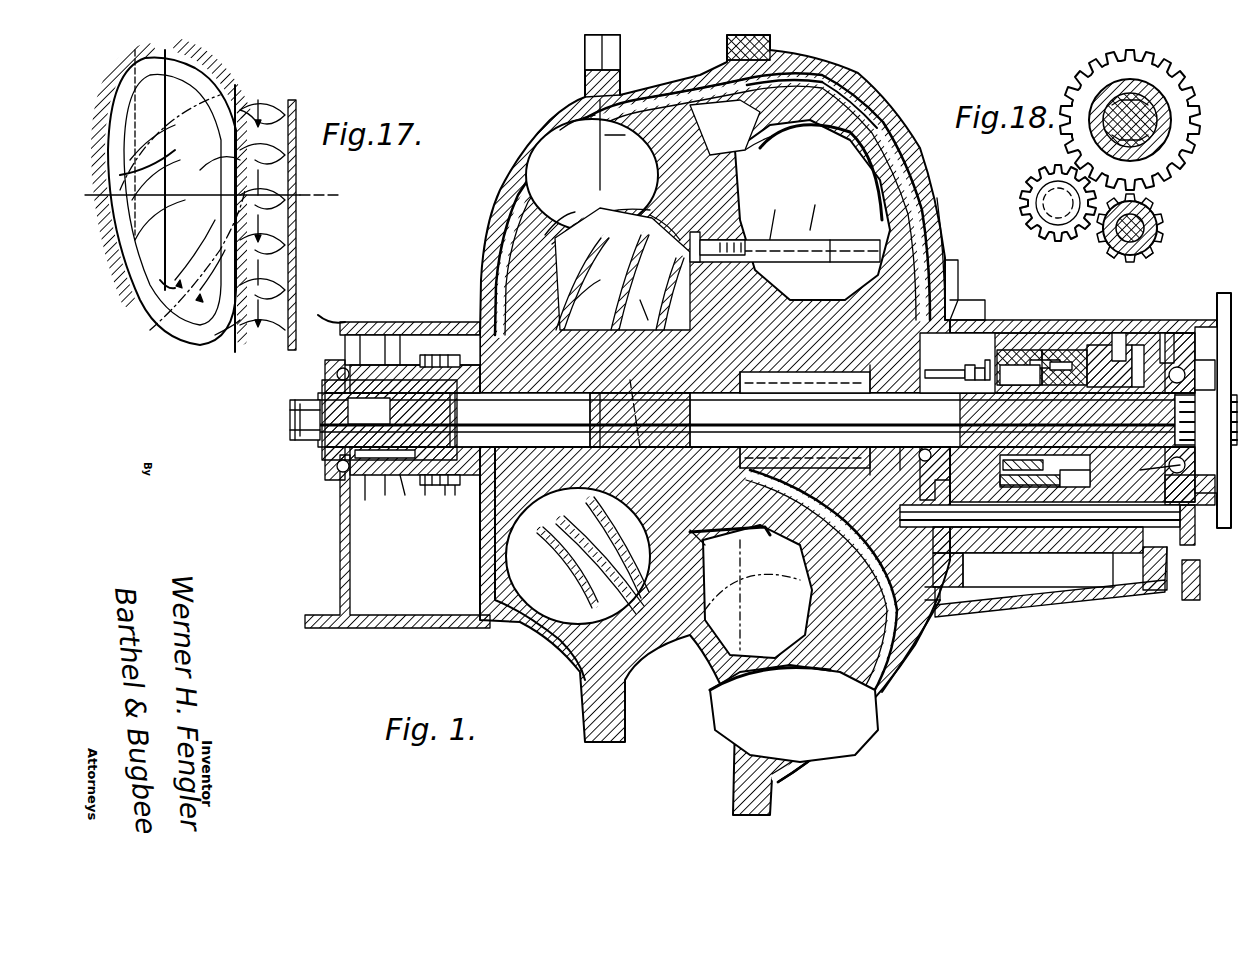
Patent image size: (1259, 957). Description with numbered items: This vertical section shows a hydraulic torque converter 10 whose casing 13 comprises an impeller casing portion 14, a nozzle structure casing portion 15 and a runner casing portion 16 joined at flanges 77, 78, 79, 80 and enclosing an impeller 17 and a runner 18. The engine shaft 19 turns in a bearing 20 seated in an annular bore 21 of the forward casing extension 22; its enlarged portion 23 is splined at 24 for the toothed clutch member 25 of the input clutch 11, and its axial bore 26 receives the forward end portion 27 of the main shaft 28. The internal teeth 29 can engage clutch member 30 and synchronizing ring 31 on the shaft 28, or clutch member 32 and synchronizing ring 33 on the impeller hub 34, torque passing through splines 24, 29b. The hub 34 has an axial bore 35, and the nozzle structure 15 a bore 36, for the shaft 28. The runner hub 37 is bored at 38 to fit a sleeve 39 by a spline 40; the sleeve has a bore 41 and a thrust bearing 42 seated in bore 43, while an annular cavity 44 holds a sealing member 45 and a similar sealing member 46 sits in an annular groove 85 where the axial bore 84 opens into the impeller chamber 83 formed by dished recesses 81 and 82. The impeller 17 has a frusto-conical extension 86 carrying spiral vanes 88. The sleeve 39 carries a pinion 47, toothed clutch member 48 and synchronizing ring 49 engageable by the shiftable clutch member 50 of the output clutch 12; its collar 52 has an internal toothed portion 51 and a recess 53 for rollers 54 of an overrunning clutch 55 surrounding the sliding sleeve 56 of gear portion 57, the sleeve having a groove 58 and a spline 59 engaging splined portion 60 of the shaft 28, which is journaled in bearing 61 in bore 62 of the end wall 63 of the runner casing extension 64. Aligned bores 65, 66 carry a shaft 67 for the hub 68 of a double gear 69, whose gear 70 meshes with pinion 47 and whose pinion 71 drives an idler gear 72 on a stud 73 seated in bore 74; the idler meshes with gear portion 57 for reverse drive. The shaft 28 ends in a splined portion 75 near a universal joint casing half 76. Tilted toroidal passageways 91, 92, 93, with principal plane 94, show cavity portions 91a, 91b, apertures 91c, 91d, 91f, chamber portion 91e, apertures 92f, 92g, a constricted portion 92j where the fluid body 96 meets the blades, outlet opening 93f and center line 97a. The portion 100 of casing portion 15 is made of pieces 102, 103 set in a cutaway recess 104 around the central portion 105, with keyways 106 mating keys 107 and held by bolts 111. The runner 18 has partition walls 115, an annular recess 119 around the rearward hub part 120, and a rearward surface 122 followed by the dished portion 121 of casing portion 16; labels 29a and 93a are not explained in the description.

In FIG. 1, the hydraulic torque converter 10 is at (480, 290).
In FIG. 1, the input clutch 11 is at (400, 322).
In FIG. 1, the output clutch 12 is at (1028, 320).
In FIG. 1, the casing 13 is at (555, 105).
In FIG. 1, the impeller casing portion 14 is at (498, 190).
In FIG. 17, the impeller casing portion 14 is at (125, 228).
In FIG. 1, the nozzle structure casing portion 15 is at (668, 86).
In FIG. 17, the nozzle structure casing portion 15 is at (206, 100).
In FIG. 1, the runner casing portion 16 is at (848, 82).
In FIG. 1, the impeller 17 is at (478, 583).
In FIG. 17, the impeller 17 is at (135, 70).
In FIG. 1, the runner 18 is at (870, 115).
In FIG. 17, the runner 18 is at (298, 218).
In FIG. 1, the engine shaft 19 is at (290, 414).
In FIG. 1, the anti-friction bearing 20 is at (333, 370).
In FIG. 1, the annular bore 21 is at (348, 322).
In FIG. 1, the forward casing extension 22 is at (340, 535).
In FIG. 1, the enlarged portion 23 is at (367, 340).
In FIG. 1, the spline 24 is at (372, 475).
In FIG. 1, the toothed annular clutch member 25 is at (380, 475).
In FIG. 1, the axial bore 26 is at (362, 478).
In FIG. 1, the reduced diameter forward end portion 27 is at (389, 420).
In FIG. 1, the main shaft 28 is at (768, 420).
In FIG. 17, the main shaft 28 is at (333, 182).
In FIG. 1, the internal teeth 29 is at (440, 356).
In FIG. 1, the lower spring 29a is at (442, 486).
In FIG. 1, the spline 29b is at (400, 340).
In FIG. 1, the toothed clutch member 30 is at (400, 478).
In FIG. 1, the toothed synchronizing ring 31 is at (428, 478).
In FIG. 1, the toothed clutch member 32 is at (462, 478).
In FIG. 1, the toothed synchronizing ring 33 is at (470, 478).
In FIG. 1, the impeller hub 34 is at (470, 325).
In FIG. 1, the axial bore 35 is at (470, 420).
In FIG. 1, the bore 36 is at (700, 405).
In FIG. 1, the runner hub 37 is at (755, 512).
In FIG. 1, the bore 38 is at (795, 440).
In FIG. 1, the sleeve 39 is at (855, 375).
In FIG. 1, the spline 40 is at (920, 408).
In FIG. 1, the bore 41 is at (820, 375).
In FIG. 1, the anti-friction thrust bearing 42 is at (940, 370).
In FIG. 1, the bore 43 is at (950, 305).
In FIG. 1, the annular cavity 44 is at (952, 278).
In FIG. 1, the spring-pressed annular sealing member 45 is at (962, 300).
In FIG. 1, the annular sealing member 46 is at (587, 294).
In FIG. 1, the pinion 47 is at (948, 365).
In FIG. 1, the toothed clutch member 48 is at (965, 368).
In FIG. 1, the toothed synchronizing ring 49 is at (985, 360).
In FIG. 1, the shiftable clutch member 50 is at (1035, 350).
In FIG. 1, the internal toothed portion 51 is at (1000, 350).
In FIG. 1, the rotatable collar 52 is at (1030, 480).
In FIG. 1, the internal recess 53 is at (1085, 345).
In FIG. 1, the rollers 54 is at (1060, 350).
In FIG. 1, the overrunning clutch 55 is at (1074, 479).
In FIG. 1, the sliding sleeve 56 is at (1020, 375).
In FIG. 18, the sliding sleeve 56 is at (1150, 95).
In FIG. 1, the external gear portion 57 is at (1118, 333).
In FIG. 18, the external gear portion 57 is at (1178, 170).
In FIG. 1, the annular groove 58 is at (1135, 333).
In FIG. 1, the spline 59 is at (1120, 378).
In FIG. 18, the spline 59 is at (1160, 107).
In FIG. 1, the splined portion 60 is at (1050, 466).
In FIG. 18, the splined portion 60 is at (1158, 128).
In FIG. 1, the anti-friction bearing 61 is at (1188, 378).
In FIG. 1, the bore 62 is at (1178, 333).
In FIG. 1, the end wall 63 is at (1166, 320).
In FIG. 1, the runner casing extension 64 is at (1045, 605).
In FIG. 1, the bore 65 is at (934, 473).
In FIG. 1, the bore 66 is at (1180, 520).
In FIG. 1, the shaft 67 is at (1040, 516).
In FIG. 18, the shaft 67 is at (1140, 232).
In FIG. 1, the hub 68 is at (1022, 553).
In FIG. 18, the hub 68 is at (1148, 256).
In FIG. 1, the double gear 69 is at (1005, 560).
In FIG. 18, the double gear 69 is at (1110, 256).
In FIG. 1, the gear 70 is at (955, 600).
In FIG. 1, the pinion 71 is at (1158, 588).
In FIG. 18, the pinion 71 is at (1160, 215).
In FIG. 1, the idler gear 72 is at (1195, 462).
In FIG. 18, the idler gear 72 is at (1020, 208).
In FIG. 18, the jack shaft 73 is at (1058, 203).
In FIG. 1, the bore 74 is at (1185, 476).
In FIG. 1, the splined portion 75 is at (1225, 392).
In FIG. 1, the casing half 76 is at (1205, 320).
In FIG. 1, the flange 77 is at (583, 60).
In FIG. 1, the flange 78 is at (608, 60).
In FIG. 1, the flange 79 is at (727, 45).
In FIG. 1, the flange 80 is at (772, 45).
In FIG. 1, the circular dished recess 81 is at (580, 220).
In FIG. 1, the circular dished recess 82 is at (645, 205).
In FIG. 1, the impeller chamber 83 is at (600, 210).
In FIG. 1, the axial bore 84 is at (599, 419).
In FIG. 1, the annular groove 85 is at (627, 413).
In FIG. 1, the frusto-conical extension 86 is at (601, 565).
In FIG. 1, the vanes 88 is at (593, 552).
In FIG. 17, the vanes 88 is at (120, 170).
In FIG. 1, the fluid passageway 91 is at (552, 168).
In FIG. 1, the upper cavity portion 91a is at (560, 128).
In FIG. 1, the upper cavity portion 91b is at (615, 120).
In FIG. 1, the outline aperture 91c is at (591, 155).
In FIG. 1, the outline aperture 91d is at (622, 146).
In FIG. 1, the chamber portion 91e is at (800, 600).
In FIG. 1, the aperture 91f is at (675, 535).
In FIG. 1, the fluid passageway 92 is at (555, 560).
In FIG. 17, the fluid passageway 92 is at (205, 312).
In FIG. 17, the aperture 92f is at (236, 333).
In FIG. 17, the aperture 92g is at (220, 158).
In FIG. 1, the constricted portion 92j is at (770, 685).
In FIG. 1, the fluid passageway 93 is at (888, 120).
In FIG. 1, the casing lip 93a is at (535, 640).
In FIG. 1, the outlet opening 93f is at (760, 175).
In FIG. 1, the principal plane 94 is at (742, 572).
In FIG. 17, the body of fluid 96 is at (168, 288).
In FIG. 1, the center line 97a is at (818, 196).
In FIG. 1, the portion 100 is at (765, 145).
In FIG. 1, the piece 102 is at (756, 139).
In FIG. 1, the piece 103 is at (900, 680).
In FIG. 1, the cutaway recess 104 is at (725, 150).
In FIG. 1, the central portion 105 is at (785, 222).
In FIG. 1, the keyways 106 is at (835, 250).
In FIG. 1, the keys 107 is at (800, 250).
In FIG. 1, the bolts 111 is at (690, 246).
In FIG. 1, the partition walls 115 is at (806, 96).
In FIG. 17, the partition walls 115 is at (258, 100).
In FIG. 1, the annular recess 119 is at (874, 428).
In FIG. 1, the rearward part of hub 120 is at (880, 430).
In FIG. 1, the dished portion 121 is at (905, 160).
In FIG. 1, the rearward surface 122 is at (920, 190).